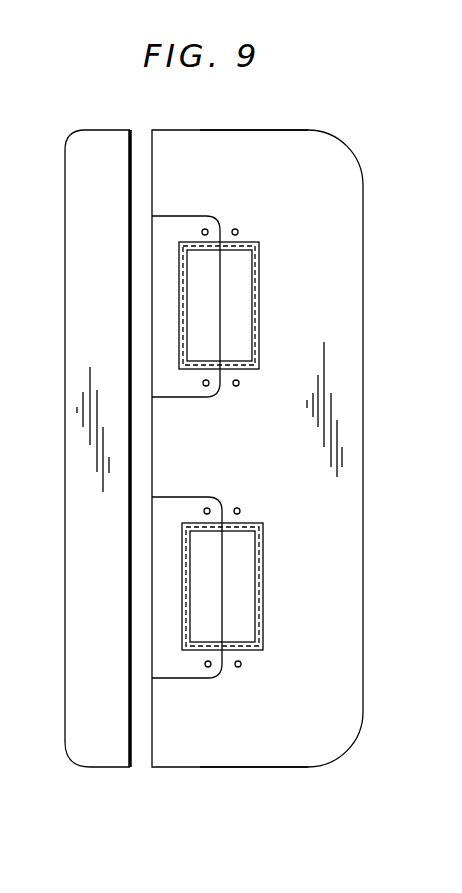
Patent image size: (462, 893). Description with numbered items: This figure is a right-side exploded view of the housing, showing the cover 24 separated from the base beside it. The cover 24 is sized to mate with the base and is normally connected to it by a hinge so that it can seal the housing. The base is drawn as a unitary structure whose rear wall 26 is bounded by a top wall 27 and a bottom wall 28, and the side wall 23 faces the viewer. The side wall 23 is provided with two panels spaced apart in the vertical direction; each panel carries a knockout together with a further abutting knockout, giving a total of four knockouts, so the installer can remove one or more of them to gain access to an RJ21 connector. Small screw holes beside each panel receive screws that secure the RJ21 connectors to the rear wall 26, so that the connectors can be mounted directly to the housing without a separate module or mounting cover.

The side wall 23 is at (284, 462).
The cover 24 is at (80, 142).
The rear wall 26 is at (363, 432).
The top wall 27 is at (221, 130).
The bottom wall 28 is at (246, 768).